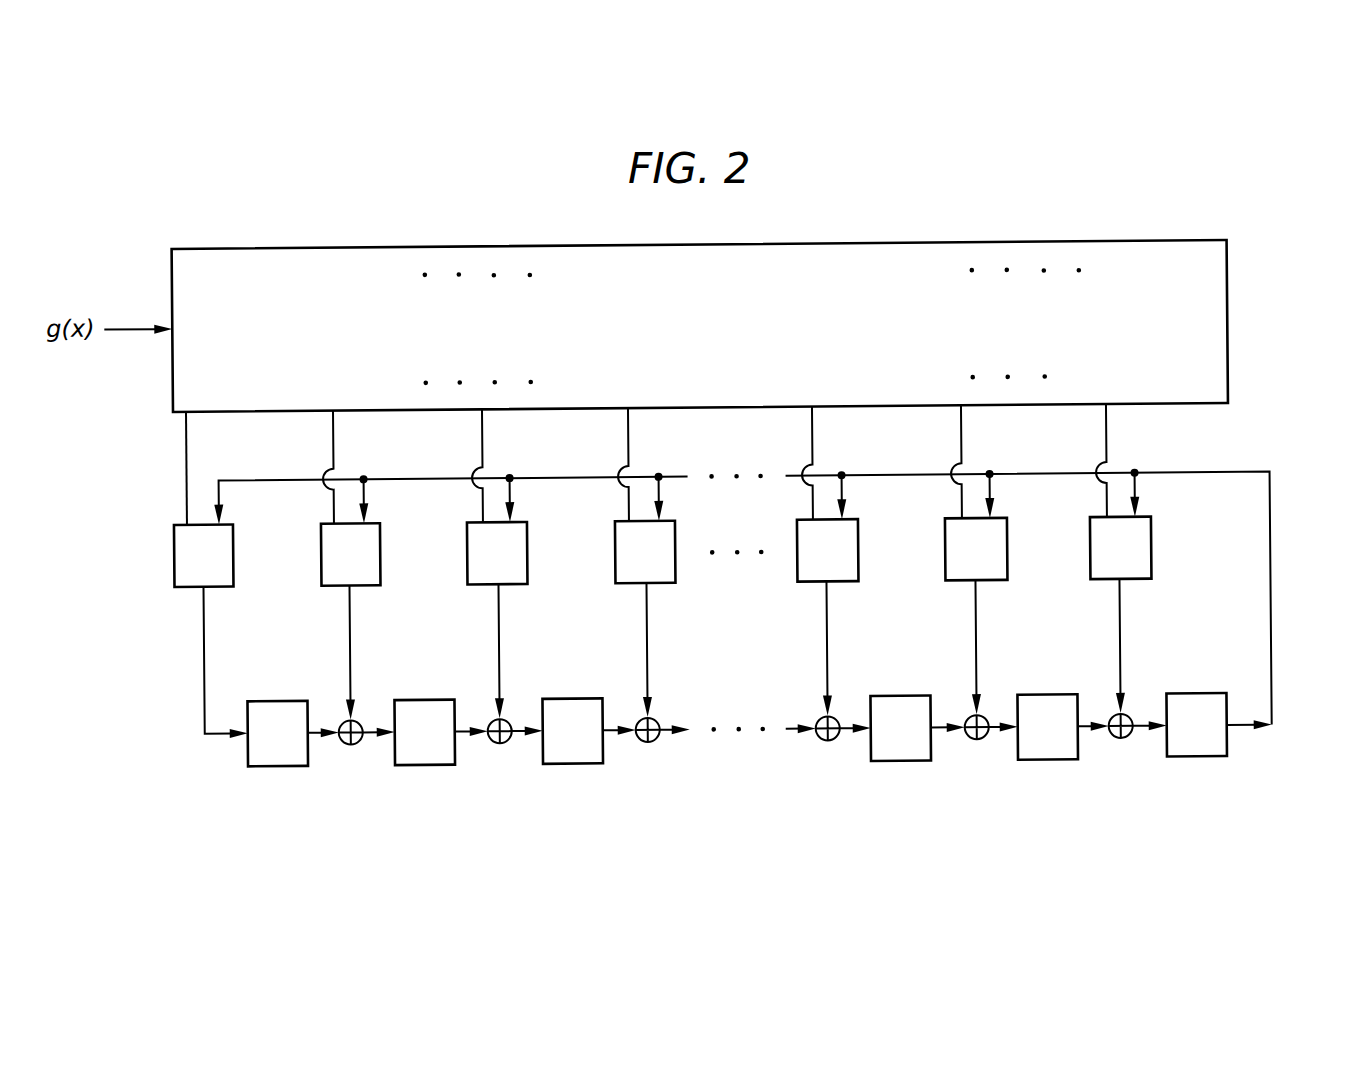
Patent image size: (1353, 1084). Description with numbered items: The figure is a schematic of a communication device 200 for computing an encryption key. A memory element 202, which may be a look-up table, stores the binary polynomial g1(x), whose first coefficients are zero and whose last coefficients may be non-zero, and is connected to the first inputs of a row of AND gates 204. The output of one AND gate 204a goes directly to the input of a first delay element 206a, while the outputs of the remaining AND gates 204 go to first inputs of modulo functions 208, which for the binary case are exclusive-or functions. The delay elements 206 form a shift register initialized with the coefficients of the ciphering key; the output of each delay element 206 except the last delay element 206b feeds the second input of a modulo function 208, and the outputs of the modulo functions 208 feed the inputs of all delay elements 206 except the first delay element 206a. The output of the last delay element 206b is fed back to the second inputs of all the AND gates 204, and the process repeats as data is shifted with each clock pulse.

The communication device 200 is at (1033, 221).
The memory element 202 is at (1228, 322).
The AND gates 204 is at (378, 587).
The first AND gate 204a is at (173, 553).
The delay elements 206 is at (567, 702).
The first delay element 206a is at (273, 702).
The last delay element 206b is at (1194, 702).
The modulo functions 208 is at (349, 755).